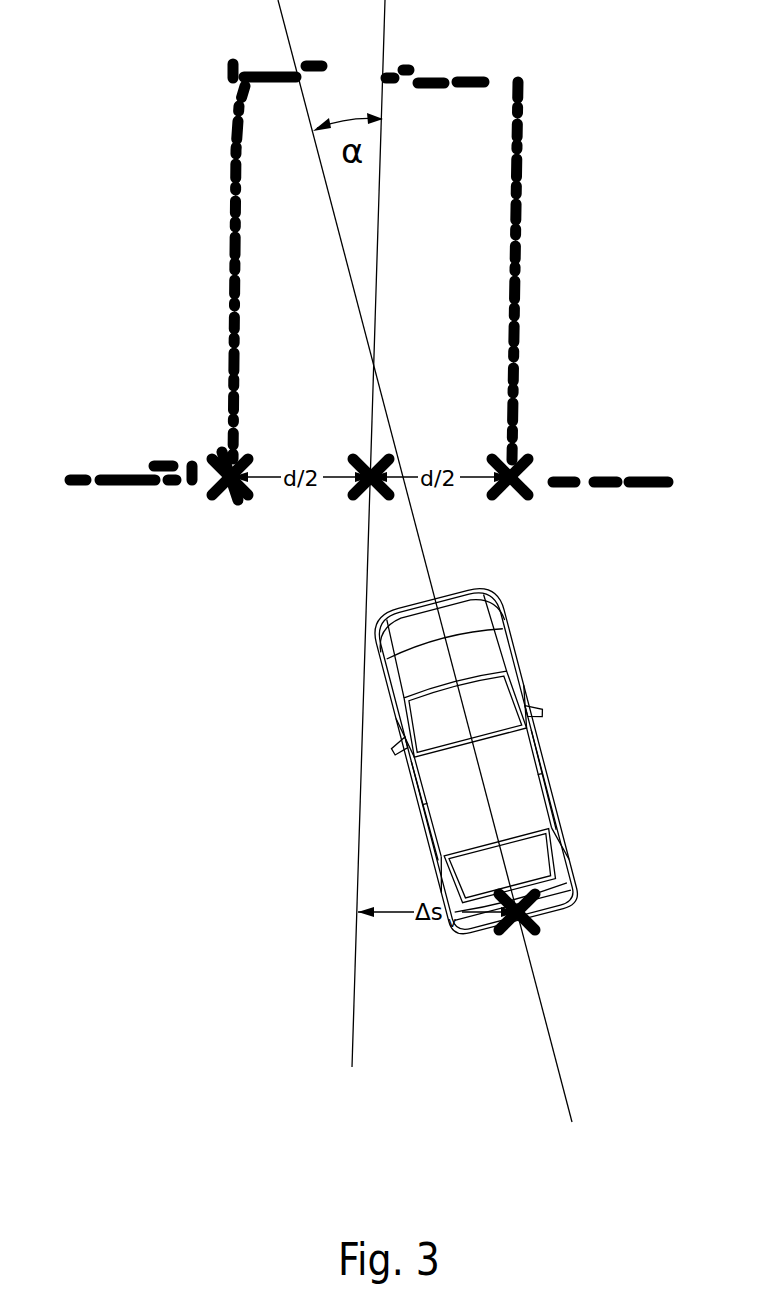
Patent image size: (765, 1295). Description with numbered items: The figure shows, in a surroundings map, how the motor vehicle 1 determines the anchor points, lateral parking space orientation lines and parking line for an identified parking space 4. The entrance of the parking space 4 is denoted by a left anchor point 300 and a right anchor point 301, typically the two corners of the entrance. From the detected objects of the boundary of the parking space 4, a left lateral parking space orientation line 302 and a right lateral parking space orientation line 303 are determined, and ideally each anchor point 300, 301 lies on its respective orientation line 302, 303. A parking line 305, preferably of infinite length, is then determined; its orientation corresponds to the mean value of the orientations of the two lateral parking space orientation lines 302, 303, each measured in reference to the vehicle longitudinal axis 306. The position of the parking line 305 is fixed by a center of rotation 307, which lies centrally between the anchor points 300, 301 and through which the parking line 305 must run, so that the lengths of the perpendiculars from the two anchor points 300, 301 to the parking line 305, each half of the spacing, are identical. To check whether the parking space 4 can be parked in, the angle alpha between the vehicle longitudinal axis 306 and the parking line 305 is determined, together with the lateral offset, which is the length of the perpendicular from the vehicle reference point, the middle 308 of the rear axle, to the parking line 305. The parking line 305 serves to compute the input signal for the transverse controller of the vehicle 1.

The motor vehicle 1 is at (555, 750).
The parking space 4 is at (485, 72).
The left anchor point 300 is at (250, 478).
The right anchor point 301 is at (520, 478).
The left lateral parking space orientation line 302 is at (233, 360).
The right lateral parking space orientation line 303 is at (513, 318).
The parking line 305 is at (380, 242).
The vehicle longitudinal axis 306 is at (557, 1055).
The center of rotation 307 is at (360, 485).
The middle of the rear axle 308 is at (530, 920).